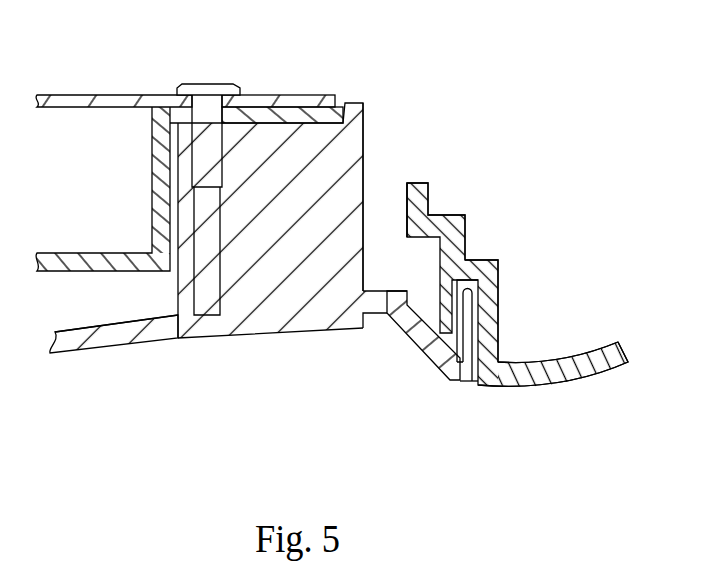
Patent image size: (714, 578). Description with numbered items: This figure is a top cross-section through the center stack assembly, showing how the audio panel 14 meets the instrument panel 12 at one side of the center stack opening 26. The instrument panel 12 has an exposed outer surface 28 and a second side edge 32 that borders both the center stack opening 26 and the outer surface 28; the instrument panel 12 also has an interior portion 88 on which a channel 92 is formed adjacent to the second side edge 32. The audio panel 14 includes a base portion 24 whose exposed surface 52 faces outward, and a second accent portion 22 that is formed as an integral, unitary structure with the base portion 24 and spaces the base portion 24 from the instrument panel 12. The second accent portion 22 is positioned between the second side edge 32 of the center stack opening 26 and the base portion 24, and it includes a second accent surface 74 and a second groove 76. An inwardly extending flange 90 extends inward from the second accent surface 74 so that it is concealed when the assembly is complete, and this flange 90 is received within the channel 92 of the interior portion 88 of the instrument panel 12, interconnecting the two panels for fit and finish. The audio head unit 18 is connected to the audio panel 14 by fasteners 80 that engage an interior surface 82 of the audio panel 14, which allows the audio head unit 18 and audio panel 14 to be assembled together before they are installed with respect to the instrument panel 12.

The instrument panel 12 is at (628, 376).
The audio panel 14 is at (257, 258).
The audio head unit 18 is at (293, 95).
The second accent portion 22 is at (550, 341).
The base portion 24 is at (85, 366).
The center stack opening 26 is at (390, 168).
The outer surface 28 is at (583, 378).
The second side edge 32 is at (463, 343).
The exposed surface 52 is at (216, 342).
The second accent surface 74 is at (433, 362).
The second groove 76 is at (376, 333).
The fasteners 80 is at (240, 83).
The interior surface 82 is at (352, 103).
The interior portion 88 is at (467, 220).
The inwardly extending flanges 90 is at (470, 315).
The channels 92 is at (467, 275).